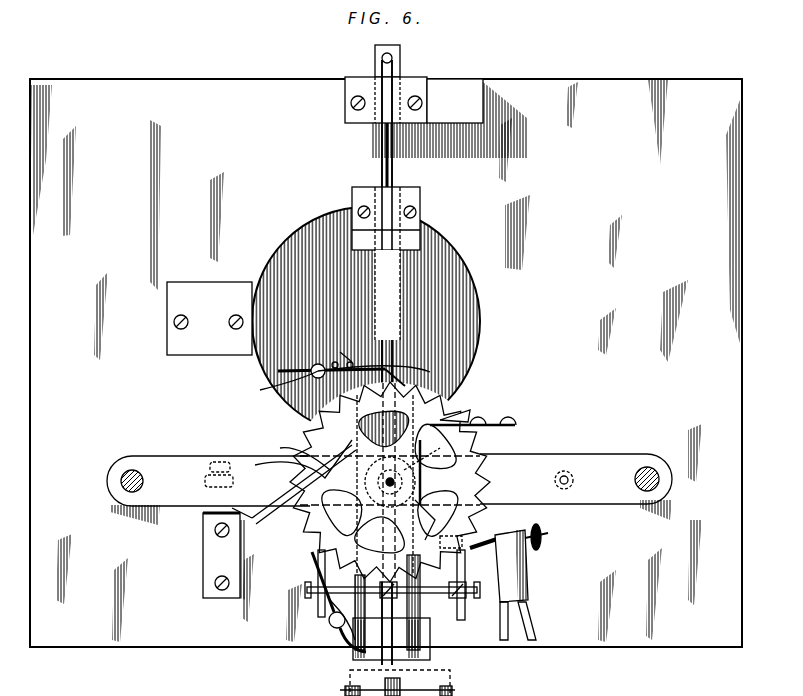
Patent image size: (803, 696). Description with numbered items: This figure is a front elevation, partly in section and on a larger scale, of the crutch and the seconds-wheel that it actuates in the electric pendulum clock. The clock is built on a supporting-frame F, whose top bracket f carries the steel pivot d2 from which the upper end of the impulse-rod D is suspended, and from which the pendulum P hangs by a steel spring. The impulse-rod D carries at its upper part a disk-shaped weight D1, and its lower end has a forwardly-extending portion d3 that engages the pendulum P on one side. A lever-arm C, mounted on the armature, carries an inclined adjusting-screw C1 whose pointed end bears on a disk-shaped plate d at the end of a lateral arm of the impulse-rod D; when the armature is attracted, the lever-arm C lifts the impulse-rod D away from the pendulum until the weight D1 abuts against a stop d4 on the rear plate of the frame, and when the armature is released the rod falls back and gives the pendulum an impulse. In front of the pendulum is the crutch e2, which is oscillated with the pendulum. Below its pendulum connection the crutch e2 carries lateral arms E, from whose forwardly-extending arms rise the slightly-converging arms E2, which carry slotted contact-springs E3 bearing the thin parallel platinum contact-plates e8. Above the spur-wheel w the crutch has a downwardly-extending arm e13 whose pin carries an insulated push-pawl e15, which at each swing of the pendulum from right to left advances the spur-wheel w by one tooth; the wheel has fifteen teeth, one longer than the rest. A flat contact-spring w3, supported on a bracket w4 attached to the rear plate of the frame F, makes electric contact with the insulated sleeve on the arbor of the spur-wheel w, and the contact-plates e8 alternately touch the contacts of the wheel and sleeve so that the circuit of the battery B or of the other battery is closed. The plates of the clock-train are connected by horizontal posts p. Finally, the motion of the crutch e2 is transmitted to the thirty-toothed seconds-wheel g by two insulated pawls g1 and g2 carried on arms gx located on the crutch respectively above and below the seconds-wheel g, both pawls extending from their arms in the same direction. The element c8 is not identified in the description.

The supporting-frame F is at (386, 363).
The top bracket f is at (418, 90).
The steel pivot d2 is at (382, 132).
The stop d4 is at (209, 318).
The crutch e2 is at (390, 298).
The disk-shaped weight D1 is at (466, 326).
The seconds-wheel g is at (390, 482).
The horizontal posts p is at (120, 482).
The bracket w4 is at (215, 526).
The insulated pawl g1 is at (340, 374).
The arm gx is at (358, 623).
The downwardly-extending arm e13 is at (455, 415).
The insulated push-pawl e15 is at (470, 420).
The platinum contact-plates e8 is at (440, 460).
The spring c8 is at (303, 456).
The flat contact-spring w3 is at (341, 489).
The spur-wheel w is at (428, 512).
The lateral arms E is at (392, 597).
The upwardly-extending arms E2 is at (318, 580).
The slotted contact-springs E3 is at (320, 550).
The disk-shaped plate d is at (446, 545).
The lever-arm C is at (526, 580).
The inclined adjusting-screw C1 is at (545, 537).
The impulse-rod D is at (328, 616).
The forwardly-extending portion d3 is at (335, 635).
The insulated pawl g2 is at (345, 640).
The pendulum P is at (398, 639).
The battery B is at (388, 683).